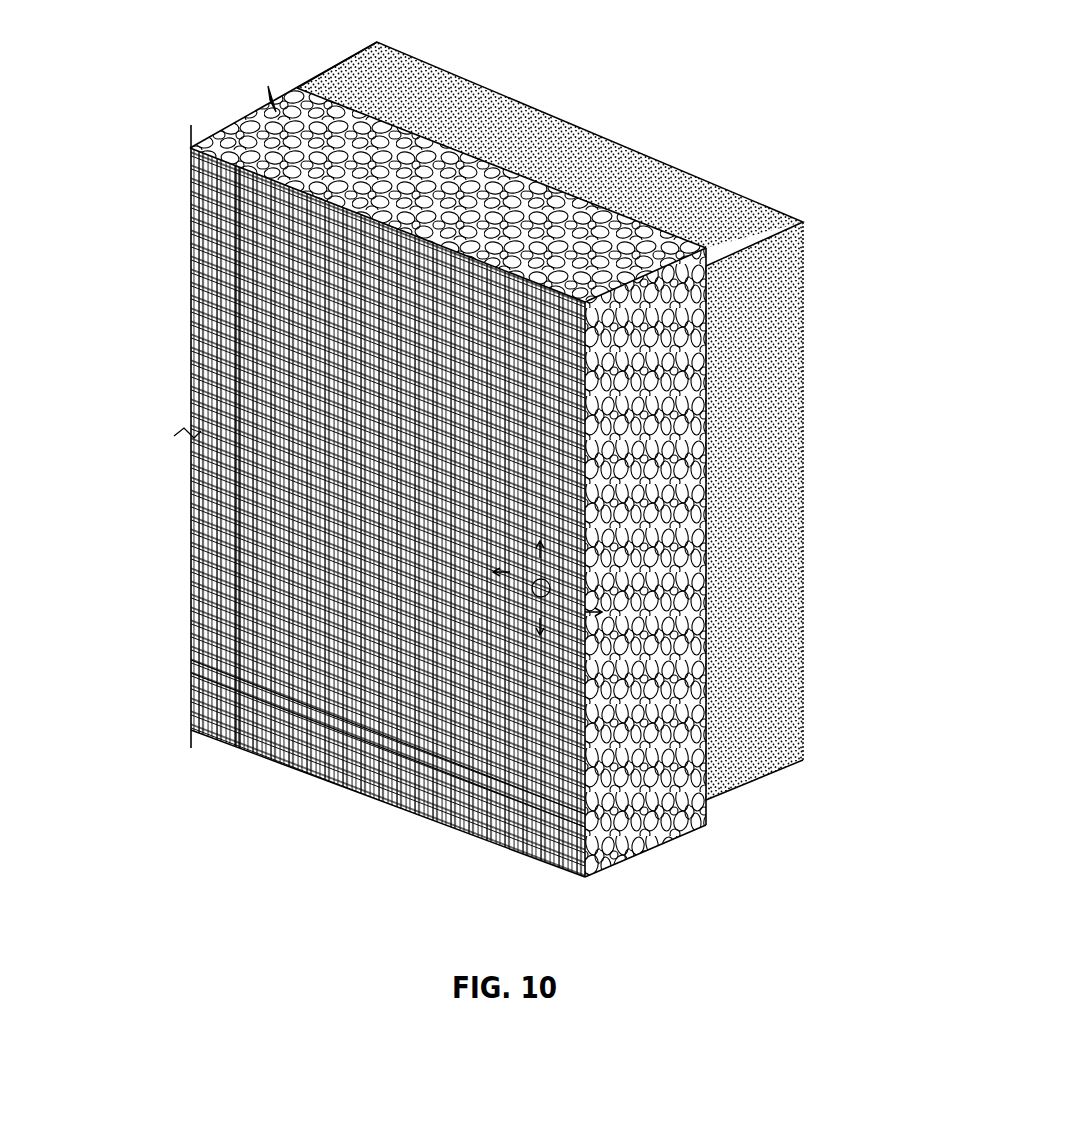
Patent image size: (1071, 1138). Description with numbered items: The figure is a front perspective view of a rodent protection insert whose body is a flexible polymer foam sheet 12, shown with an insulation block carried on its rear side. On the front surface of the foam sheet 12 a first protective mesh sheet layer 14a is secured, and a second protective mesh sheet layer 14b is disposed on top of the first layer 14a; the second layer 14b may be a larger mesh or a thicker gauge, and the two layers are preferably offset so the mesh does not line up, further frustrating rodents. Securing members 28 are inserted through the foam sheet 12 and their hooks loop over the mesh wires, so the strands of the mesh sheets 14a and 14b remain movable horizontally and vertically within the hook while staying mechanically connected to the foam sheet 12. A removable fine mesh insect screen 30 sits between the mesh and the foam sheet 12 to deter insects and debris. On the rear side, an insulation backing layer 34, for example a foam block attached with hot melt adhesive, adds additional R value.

The flexible polymer foam sheet 12 is at (461, 485).
The first protective mesh sheet layer 14a is at (237, 737).
The second protective mesh sheet layer 14b is at (195, 676).
The securing member 28 is at (535, 588).
The insect screen 30 is at (305, 512).
The insulation backing layer 34 is at (493, 128).